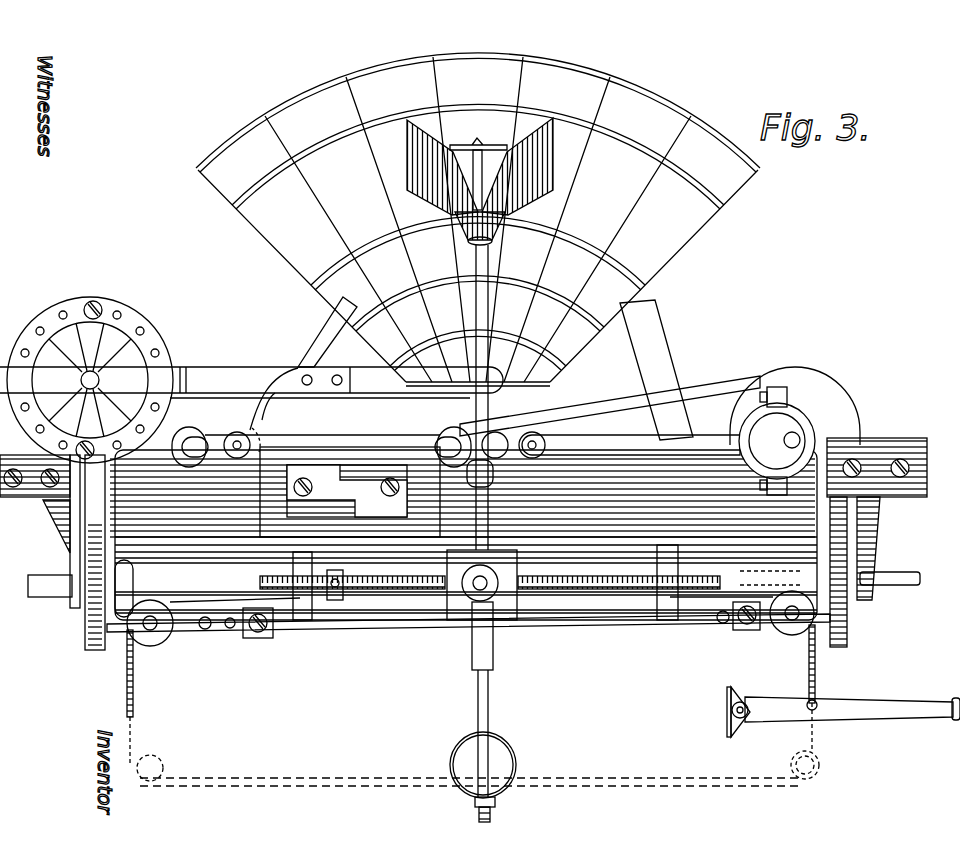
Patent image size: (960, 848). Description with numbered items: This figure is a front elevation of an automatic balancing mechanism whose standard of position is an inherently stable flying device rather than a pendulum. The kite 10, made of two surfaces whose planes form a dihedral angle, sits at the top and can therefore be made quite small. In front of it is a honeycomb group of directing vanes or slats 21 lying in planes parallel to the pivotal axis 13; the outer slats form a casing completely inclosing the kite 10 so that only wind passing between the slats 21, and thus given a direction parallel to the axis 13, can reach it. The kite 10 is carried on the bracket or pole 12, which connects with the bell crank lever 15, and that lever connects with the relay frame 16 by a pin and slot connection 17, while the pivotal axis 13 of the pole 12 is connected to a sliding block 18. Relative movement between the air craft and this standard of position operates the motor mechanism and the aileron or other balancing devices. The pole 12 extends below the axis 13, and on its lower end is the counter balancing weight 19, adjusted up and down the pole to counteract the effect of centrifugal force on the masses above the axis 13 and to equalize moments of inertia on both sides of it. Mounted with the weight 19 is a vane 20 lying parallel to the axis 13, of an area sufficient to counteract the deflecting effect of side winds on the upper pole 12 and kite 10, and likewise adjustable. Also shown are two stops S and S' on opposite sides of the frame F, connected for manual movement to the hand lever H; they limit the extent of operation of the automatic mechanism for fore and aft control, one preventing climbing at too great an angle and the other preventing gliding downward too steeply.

The kite 10 is at (538, 150).
The directing vanes or slats 21 is at (598, 192).
The bracket or pole 12 is at (489, 305).
The bell crank lever 15 is at (376, 390).
The pin and slot connection 17 is at (240, 432).
The relay frame 16 is at (265, 512).
The pivotal axis 13 is at (475, 592).
The sliding block 18 is at (505, 608).
The vane 20 is at (478, 752).
The counter balancing weight 19 is at (507, 765).
The frame F is at (376, 630).
The stop S is at (258, 639).
The stop S' is at (746, 636).
The hand lever H is at (887, 700).